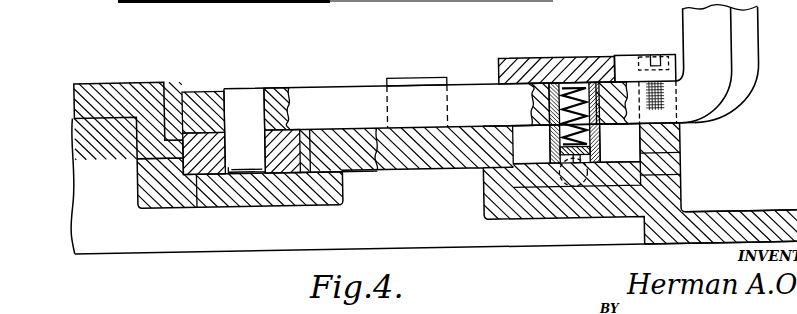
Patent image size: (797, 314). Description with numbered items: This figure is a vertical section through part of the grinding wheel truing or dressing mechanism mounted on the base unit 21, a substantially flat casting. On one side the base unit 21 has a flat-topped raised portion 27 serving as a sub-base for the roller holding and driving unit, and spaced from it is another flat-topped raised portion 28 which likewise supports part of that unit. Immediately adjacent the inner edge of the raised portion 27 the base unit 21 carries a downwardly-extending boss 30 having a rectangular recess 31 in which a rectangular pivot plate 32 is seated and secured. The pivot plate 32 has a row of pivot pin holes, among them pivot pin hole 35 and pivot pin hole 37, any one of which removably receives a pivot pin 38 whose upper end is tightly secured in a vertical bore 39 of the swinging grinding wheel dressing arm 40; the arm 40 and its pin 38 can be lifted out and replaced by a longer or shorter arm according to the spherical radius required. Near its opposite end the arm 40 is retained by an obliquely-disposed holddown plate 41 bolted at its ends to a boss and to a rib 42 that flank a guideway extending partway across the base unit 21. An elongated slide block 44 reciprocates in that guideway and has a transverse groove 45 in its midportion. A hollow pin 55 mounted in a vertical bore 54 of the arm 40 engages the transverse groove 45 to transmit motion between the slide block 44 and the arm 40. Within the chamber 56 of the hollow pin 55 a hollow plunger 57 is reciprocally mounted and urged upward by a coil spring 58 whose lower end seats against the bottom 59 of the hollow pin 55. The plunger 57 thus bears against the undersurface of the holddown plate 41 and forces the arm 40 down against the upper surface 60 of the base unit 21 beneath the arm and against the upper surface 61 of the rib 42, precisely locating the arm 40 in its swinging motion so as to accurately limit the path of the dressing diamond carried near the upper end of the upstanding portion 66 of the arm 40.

The base unit 21 is at (745, 219).
The raised portion 27 is at (118, 80).
The raised portion 28 is at (421, 80).
The downwardly-extending boss 30 is at (137, 200).
The rectangular recess 31 is at (140, 155).
The pivot plate 32 is at (298, 167).
The pivot pin hole 35 is at (282, 167).
The pivot pin hole 37 is at (196, 172).
The pivot pin 38 is at (240, 100).
The vertical bore 39 is at (276, 92).
The grinding wheel dressing arm 40 is at (341, 88).
The holddown plate 41 is at (541, 62).
The rib 42 is at (678, 104).
The slide block 44 is at (680, 184).
The transverse groove 45 is at (620, 168).
The vertical bore 54 is at (532, 102).
The hollow pin 55 is at (552, 141).
The chamber 56 is at (558, 151).
The hollow plunger 57 is at (591, 88).
The coil spring 58 is at (570, 92).
The bottom of the hollow pin 59 is at (553, 162).
The upper surface 60 is at (382, 170).
The upper surface 61 is at (680, 144).
The upstanding portion 66 is at (750, 30).